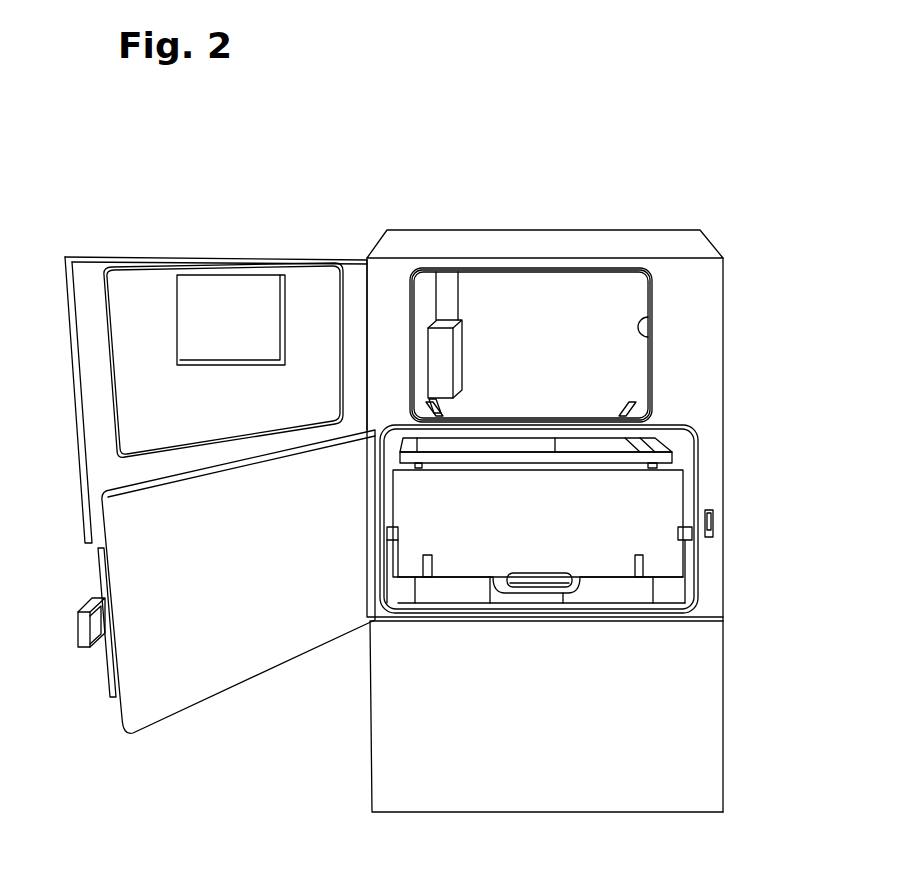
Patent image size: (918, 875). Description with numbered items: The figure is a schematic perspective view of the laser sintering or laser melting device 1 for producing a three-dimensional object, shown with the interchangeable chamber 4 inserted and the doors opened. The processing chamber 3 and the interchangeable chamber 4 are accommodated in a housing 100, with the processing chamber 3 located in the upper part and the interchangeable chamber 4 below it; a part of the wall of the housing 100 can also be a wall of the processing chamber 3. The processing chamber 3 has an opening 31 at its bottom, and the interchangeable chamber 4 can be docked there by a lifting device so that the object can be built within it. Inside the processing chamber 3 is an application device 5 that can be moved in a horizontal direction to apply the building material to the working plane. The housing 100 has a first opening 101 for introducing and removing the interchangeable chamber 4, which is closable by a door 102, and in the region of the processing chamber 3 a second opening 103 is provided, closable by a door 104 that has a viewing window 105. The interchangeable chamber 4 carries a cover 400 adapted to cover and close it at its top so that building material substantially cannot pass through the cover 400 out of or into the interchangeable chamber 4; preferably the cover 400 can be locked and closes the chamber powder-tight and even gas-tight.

The laser sintering or laser melting device 1 is at (551, 208).
The processing chamber 3 is at (603, 283).
The interchangeable chamber 4 is at (690, 447).
The application device 5 is at (442, 338).
The opening 31 is at (493, 414).
The housing 100 is at (723, 556).
The first opening 101 is at (683, 583).
The door 102 is at (140, 690).
The second opening 103 is at (640, 338).
The door 104 is at (135, 372).
The viewing window 105 is at (218, 303).
The cover 400 is at (645, 505).